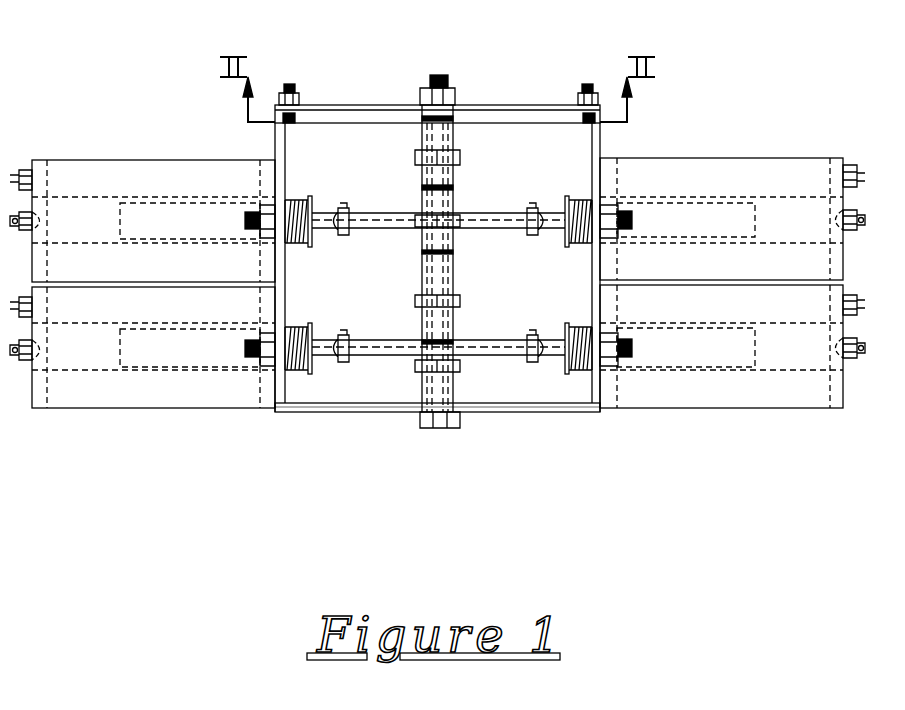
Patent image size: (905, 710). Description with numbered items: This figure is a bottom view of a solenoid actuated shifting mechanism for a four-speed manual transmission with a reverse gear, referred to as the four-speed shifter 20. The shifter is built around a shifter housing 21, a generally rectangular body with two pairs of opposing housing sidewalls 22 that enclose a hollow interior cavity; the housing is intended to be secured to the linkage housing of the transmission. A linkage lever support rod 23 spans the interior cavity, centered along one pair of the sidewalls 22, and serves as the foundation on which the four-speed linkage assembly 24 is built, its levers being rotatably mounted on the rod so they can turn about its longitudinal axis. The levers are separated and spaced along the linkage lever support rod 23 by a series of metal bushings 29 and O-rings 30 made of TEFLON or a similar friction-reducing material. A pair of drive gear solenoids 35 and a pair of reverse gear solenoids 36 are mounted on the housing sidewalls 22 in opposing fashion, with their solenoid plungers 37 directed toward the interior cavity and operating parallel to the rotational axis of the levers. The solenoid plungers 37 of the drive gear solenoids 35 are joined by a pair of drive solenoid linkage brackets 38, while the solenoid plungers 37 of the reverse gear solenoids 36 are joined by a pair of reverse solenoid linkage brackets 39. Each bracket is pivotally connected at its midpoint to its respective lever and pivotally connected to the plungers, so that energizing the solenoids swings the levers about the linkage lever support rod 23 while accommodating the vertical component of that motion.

The four-speed shifter 20 is at (723, 102).
The shifter housing 21 is at (347, 413).
The housing sidewalls 22 is at (602, 148).
The linkage lever support rod 23 is at (447, 82).
The four-speed linkage assembly 24 is at (497, 300).
The metal bushings 29 is at (454, 265).
The O-rings 30 is at (423, 252).
The drive gear solenoids 35 is at (80, 175).
The reverse gear solenoids 36 is at (80, 393).
The solenoid plungers 37 is at (297, 200).
The drive solenoid linkage brackets 38 is at (383, 231).
The reverse solenoid linkage brackets 39 is at (403, 357).